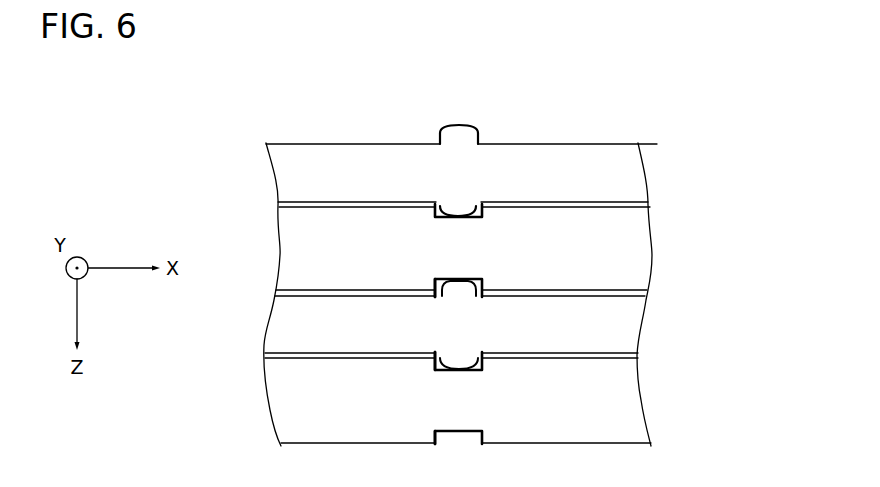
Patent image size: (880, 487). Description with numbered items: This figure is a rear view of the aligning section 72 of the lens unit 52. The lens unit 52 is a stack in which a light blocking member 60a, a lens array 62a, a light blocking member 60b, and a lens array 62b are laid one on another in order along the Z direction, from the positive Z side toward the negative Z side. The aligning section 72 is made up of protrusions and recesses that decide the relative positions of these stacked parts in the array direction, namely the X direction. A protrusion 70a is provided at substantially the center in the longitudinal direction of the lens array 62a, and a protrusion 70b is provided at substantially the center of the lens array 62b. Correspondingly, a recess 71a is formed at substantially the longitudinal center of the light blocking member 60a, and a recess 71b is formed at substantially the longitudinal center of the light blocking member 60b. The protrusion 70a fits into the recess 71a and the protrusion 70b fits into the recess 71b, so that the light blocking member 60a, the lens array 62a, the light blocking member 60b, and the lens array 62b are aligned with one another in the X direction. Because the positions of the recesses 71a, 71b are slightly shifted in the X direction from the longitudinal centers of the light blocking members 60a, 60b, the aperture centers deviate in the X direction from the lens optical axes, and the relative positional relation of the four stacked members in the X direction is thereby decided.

The lens unit 52 is at (190, 168).
The light blocking member 60a is at (630, 396).
The light blocking member 60b is at (632, 248).
The lens array 62a is at (632, 319).
The lens array 62b is at (632, 171).
The protrusion 70a is at (460, 292).
The protrusion 70b is at (458, 214).
The recess 71a is at (433, 374).
The recess 71b is at (432, 270).
The aligning section 72 is at (463, 121).